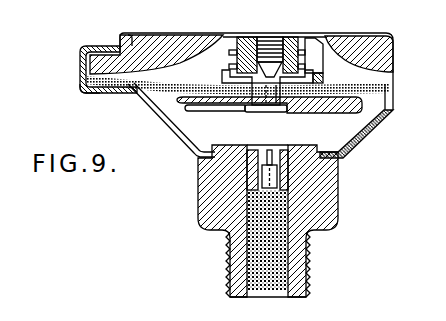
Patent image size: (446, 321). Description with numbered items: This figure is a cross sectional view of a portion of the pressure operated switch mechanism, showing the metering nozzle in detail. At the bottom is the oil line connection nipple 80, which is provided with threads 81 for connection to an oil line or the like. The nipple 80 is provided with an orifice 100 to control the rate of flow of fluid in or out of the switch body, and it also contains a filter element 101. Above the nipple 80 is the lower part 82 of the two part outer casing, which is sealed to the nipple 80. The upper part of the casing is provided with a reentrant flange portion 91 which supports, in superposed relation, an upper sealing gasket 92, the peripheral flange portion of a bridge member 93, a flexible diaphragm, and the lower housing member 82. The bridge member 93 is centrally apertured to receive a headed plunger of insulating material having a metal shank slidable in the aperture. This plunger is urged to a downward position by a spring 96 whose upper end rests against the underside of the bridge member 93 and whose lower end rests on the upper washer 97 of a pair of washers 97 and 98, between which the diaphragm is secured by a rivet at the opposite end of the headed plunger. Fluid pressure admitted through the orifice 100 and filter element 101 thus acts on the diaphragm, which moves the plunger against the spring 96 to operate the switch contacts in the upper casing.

The nipple 80 is at (198, 192).
The threads 81 is at (232, 265).
The lower part of outer casing 82 is at (143, 111).
The reentrant flange portion 91 is at (82, 82).
The upper sealing gasket 92 is at (108, 46).
The bridge member 93 is at (183, 48).
The spring 96 is at (318, 45).
The upper washer 97 is at (338, 42).
The lower washer 98 is at (213, 111).
The orifice 100 is at (268, 158).
The filter element 101 is at (275, 245).